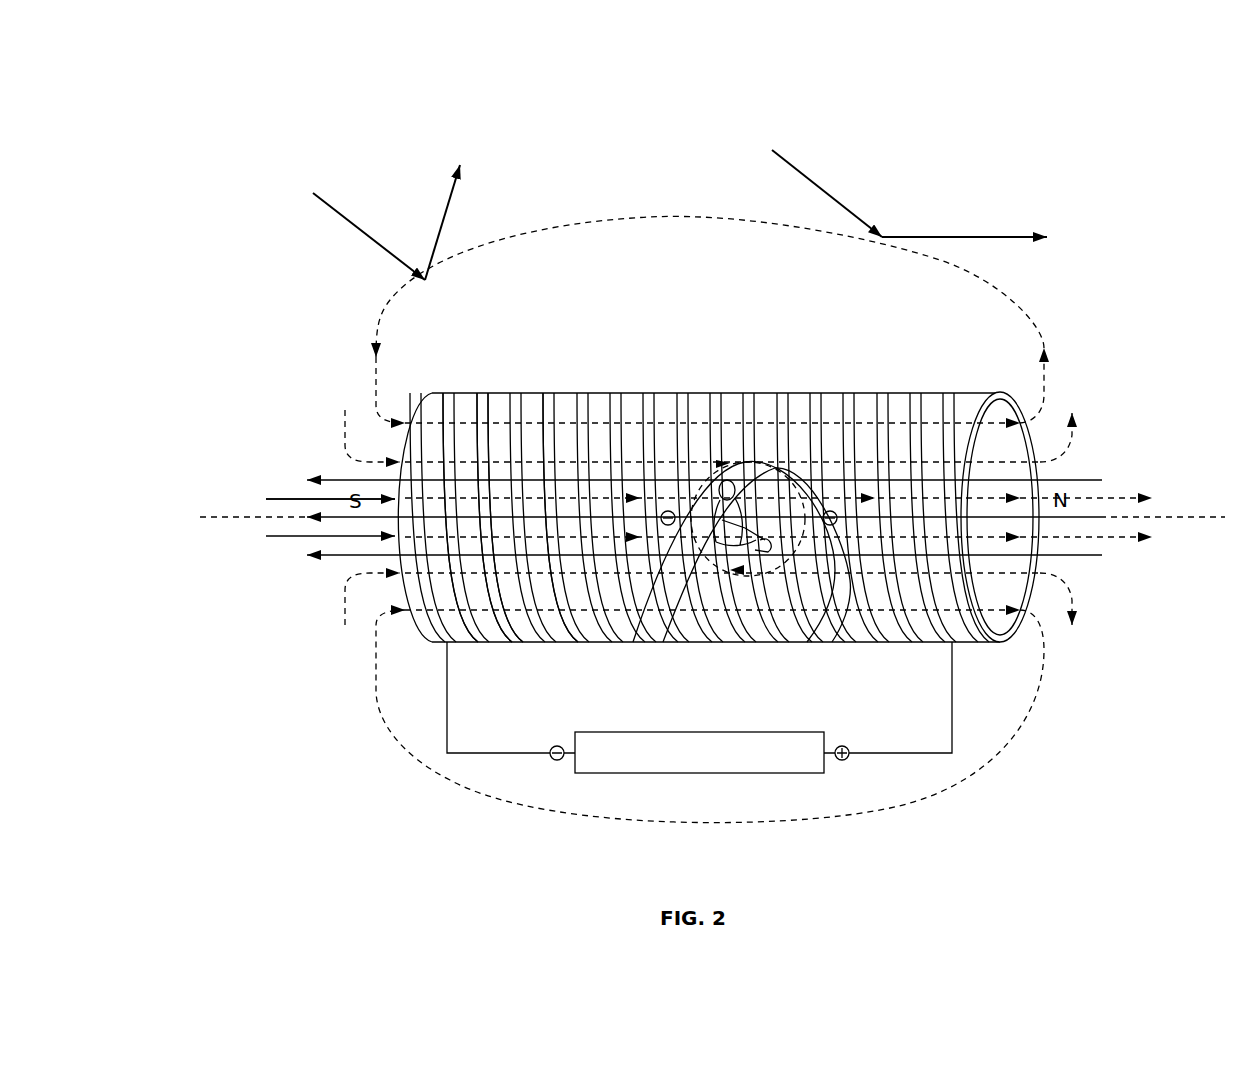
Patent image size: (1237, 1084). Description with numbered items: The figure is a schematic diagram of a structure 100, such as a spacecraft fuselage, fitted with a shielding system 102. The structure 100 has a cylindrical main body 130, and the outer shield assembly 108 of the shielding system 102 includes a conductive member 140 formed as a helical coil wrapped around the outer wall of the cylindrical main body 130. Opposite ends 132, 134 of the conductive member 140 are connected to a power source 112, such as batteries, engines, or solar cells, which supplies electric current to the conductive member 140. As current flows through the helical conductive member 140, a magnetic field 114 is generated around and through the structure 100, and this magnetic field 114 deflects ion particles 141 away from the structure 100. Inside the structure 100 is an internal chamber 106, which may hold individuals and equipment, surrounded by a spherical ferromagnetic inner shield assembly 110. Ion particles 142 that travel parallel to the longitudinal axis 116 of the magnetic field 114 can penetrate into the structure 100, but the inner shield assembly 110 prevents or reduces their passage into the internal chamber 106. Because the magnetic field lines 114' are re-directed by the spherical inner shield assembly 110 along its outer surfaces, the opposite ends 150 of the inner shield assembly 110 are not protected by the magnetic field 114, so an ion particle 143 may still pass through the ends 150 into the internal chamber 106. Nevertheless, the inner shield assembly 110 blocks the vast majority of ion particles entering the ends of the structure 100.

The structure 100 is at (752, 485).
The shielding system 102 is at (806, 468).
The internal chamber 106 is at (726, 466).
The outer shield assembly 108 is at (480, 400).
The inner shield assembly 110 is at (786, 466).
The power source 112 is at (697, 774).
The magnetic field 114 is at (714, 513).
The magnetic field lines 114' is at (741, 527).
The longitudinal axis 116 is at (247, 518).
The cylindrical main body 130 is at (493, 393).
The first end of conductive member 132 is at (447, 644).
The second end of conductive member 134 is at (952, 645).
The conductive member 140 is at (445, 400).
The ion particles 141 is at (378, 250).
The ion particles 142 is at (1080, 480).
The ion particle 143 is at (1093, 518).
The opposite ends of inner shield assembly 150 is at (630, 640).